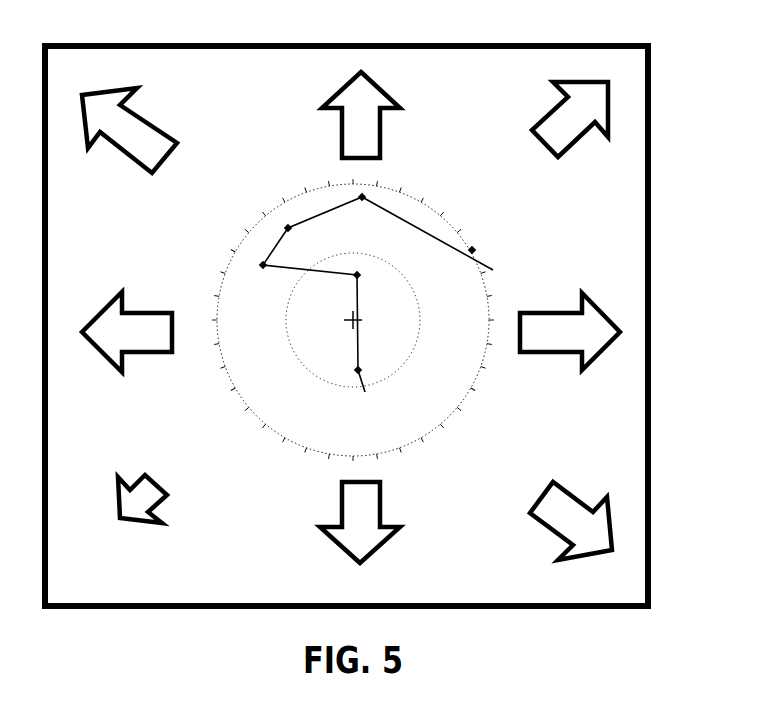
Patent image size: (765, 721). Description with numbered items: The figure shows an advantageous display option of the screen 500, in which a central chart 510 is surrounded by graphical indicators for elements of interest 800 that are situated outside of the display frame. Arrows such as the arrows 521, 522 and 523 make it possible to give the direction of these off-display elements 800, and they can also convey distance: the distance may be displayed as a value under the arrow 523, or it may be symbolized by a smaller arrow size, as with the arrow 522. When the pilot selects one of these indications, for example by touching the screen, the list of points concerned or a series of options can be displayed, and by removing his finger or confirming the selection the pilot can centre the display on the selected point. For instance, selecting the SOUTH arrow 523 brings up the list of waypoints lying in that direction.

The display screen 500 is at (578, 37).
The polar chart / wind display 510 is at (438, 197).
The arrow 521 is at (142, 303).
The smaller arrow 522 is at (143, 470).
The arrow 523 is at (382, 513).
The elements of interest 800 is at (360, 590).